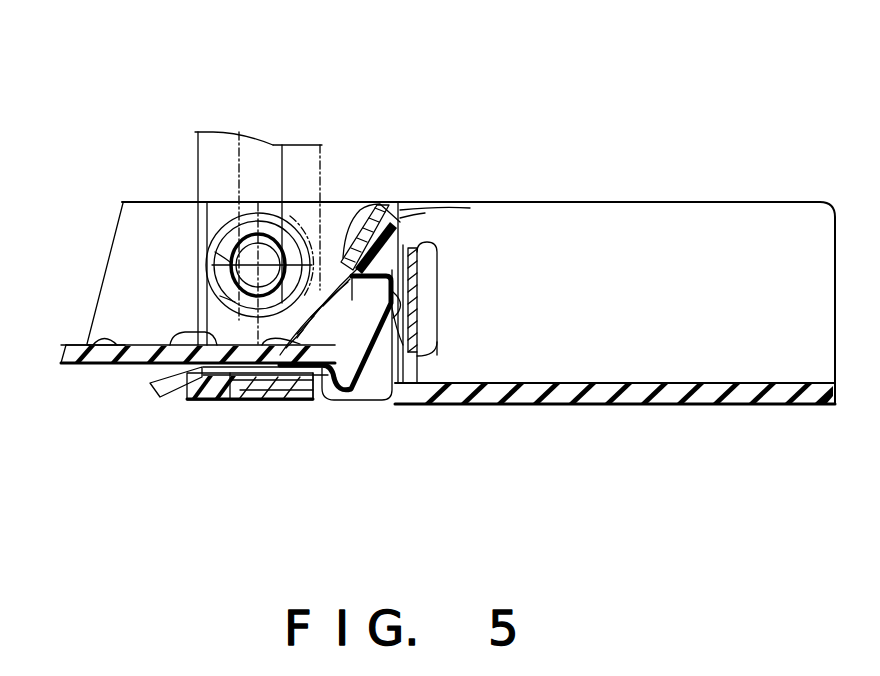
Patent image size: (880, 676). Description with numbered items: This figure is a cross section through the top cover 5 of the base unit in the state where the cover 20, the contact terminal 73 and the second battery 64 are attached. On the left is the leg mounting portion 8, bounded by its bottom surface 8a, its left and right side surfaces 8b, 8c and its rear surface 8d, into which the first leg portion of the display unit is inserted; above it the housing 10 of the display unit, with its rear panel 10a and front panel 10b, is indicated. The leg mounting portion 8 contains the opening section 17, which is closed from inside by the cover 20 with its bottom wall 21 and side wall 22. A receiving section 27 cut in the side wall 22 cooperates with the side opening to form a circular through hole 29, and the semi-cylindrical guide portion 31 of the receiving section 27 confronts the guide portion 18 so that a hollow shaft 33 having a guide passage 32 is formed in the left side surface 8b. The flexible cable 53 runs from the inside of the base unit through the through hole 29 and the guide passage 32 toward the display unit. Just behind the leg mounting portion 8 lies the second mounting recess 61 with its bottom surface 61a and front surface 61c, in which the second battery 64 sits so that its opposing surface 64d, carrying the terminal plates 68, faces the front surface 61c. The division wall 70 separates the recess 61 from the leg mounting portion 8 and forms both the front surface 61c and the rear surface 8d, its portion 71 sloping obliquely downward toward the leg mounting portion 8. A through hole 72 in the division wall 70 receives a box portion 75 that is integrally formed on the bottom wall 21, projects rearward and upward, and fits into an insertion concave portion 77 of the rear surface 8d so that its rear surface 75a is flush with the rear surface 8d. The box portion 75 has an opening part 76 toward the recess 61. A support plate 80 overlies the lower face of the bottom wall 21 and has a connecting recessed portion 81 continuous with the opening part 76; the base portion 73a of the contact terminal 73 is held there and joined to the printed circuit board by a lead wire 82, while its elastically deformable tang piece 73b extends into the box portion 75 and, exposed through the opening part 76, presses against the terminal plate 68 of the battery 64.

The top cover 5 is at (643, 397).
The leg mounting portion 8 is at (115, 319).
The bottom surface 8a is at (100, 340).
The left side surface 8b is at (113, 296).
The right side surface 8c is at (137, 250).
The rear surface 8d is at (400, 230).
The housing 10 is at (195, 52).
The rear panel 10a is at (300, 142).
The front panel 10b is at (222, 136).
The opening section 17 is at (150, 360).
The semi-cylindrical guide portion 18 is at (252, 228).
The cover 20 is at (328, 390).
The bottom wall 21 is at (270, 382).
The side wall 22 is at (227, 298).
The receiving section 27 is at (362, 218).
The through hole 29 is at (207, 240).
The semi-cylindrical guide portion 31 is at (237, 385).
The guide passage 32 is at (276, 252).
The hollow shaft 33 is at (223, 258).
The flexible cable 53 is at (278, 187).
The second mounting recess 61 is at (723, 372).
The bottom surface 61a is at (512, 381).
The front surface 61c is at (470, 208).
The second battery 64 is at (652, 215).
The opposing surface 64d is at (437, 277).
The terminal plates 68 is at (413, 332).
The division wall 70 is at (425, 213).
The portion 71 is at (410, 222).
The through hole 72 is at (408, 398).
The contact terminal 73 is at (360, 395).
The base portion 73a is at (253, 368).
The tang piece 73b is at (402, 345).
The box portion 75 is at (418, 250).
The rear surface 75a is at (288, 378).
The opening part 76 is at (410, 310).
The insertion concave portion 77 is at (367, 298).
The support plate 80 is at (202, 395).
The connecting recessed portion 81 is at (302, 386).
The lead wire 82 is at (165, 390).